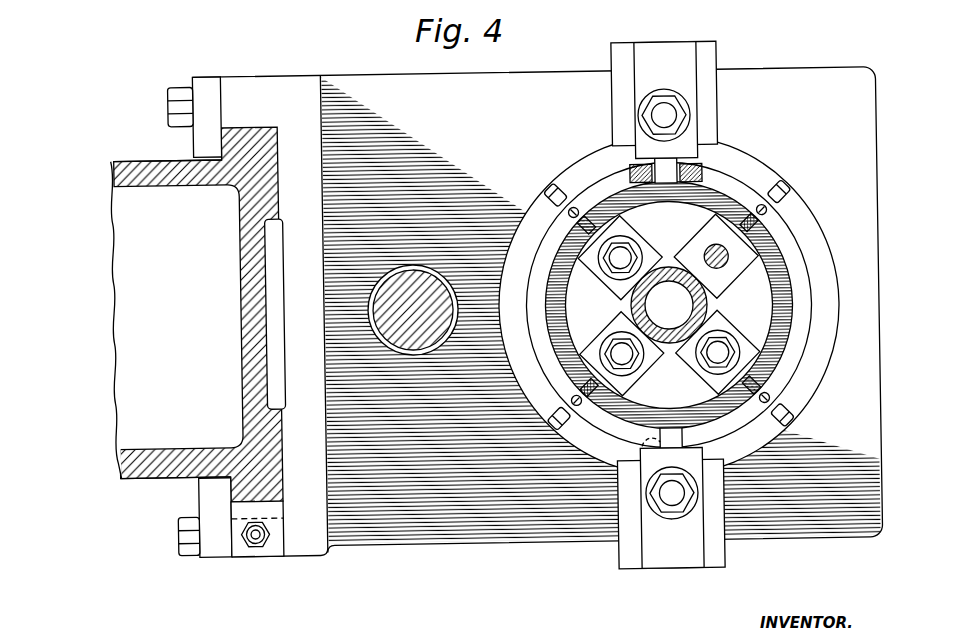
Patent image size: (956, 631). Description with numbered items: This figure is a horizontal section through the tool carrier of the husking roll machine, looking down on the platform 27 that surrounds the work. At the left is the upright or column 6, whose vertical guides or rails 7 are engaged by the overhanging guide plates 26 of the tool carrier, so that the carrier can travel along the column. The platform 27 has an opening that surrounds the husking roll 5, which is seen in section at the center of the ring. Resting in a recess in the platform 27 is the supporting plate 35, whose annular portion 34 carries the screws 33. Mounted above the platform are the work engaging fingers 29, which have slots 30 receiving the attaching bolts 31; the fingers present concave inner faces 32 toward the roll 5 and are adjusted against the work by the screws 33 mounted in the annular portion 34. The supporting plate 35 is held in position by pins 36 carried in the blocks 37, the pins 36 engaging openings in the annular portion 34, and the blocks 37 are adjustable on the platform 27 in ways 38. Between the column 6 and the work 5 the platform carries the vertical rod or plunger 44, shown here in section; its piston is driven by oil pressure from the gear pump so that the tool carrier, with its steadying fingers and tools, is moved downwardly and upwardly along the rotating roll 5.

The husking roll 5 is at (668, 344).
The upright or column 6 is at (241, 253).
The vertical guides or rails 7 is at (275, 130).
The overhanging guide plates 26 is at (203, 125).
The platform 27 is at (507, 519).
The work engaging fingers 29 is at (620, 320).
The slots 30 is at (726, 252).
The attaching bolts 31 is at (704, 242).
The concave inner faces 32 is at (661, 266).
The screws 33 is at (790, 201).
The annular portion 34 is at (800, 270).
The supporting plate 35 is at (759, 330).
The pins 36 is at (641, 168).
The blocks 37 is at (683, 52).
The ways 38 is at (705, 58).
The vertical rod or plunger 44 is at (382, 304).